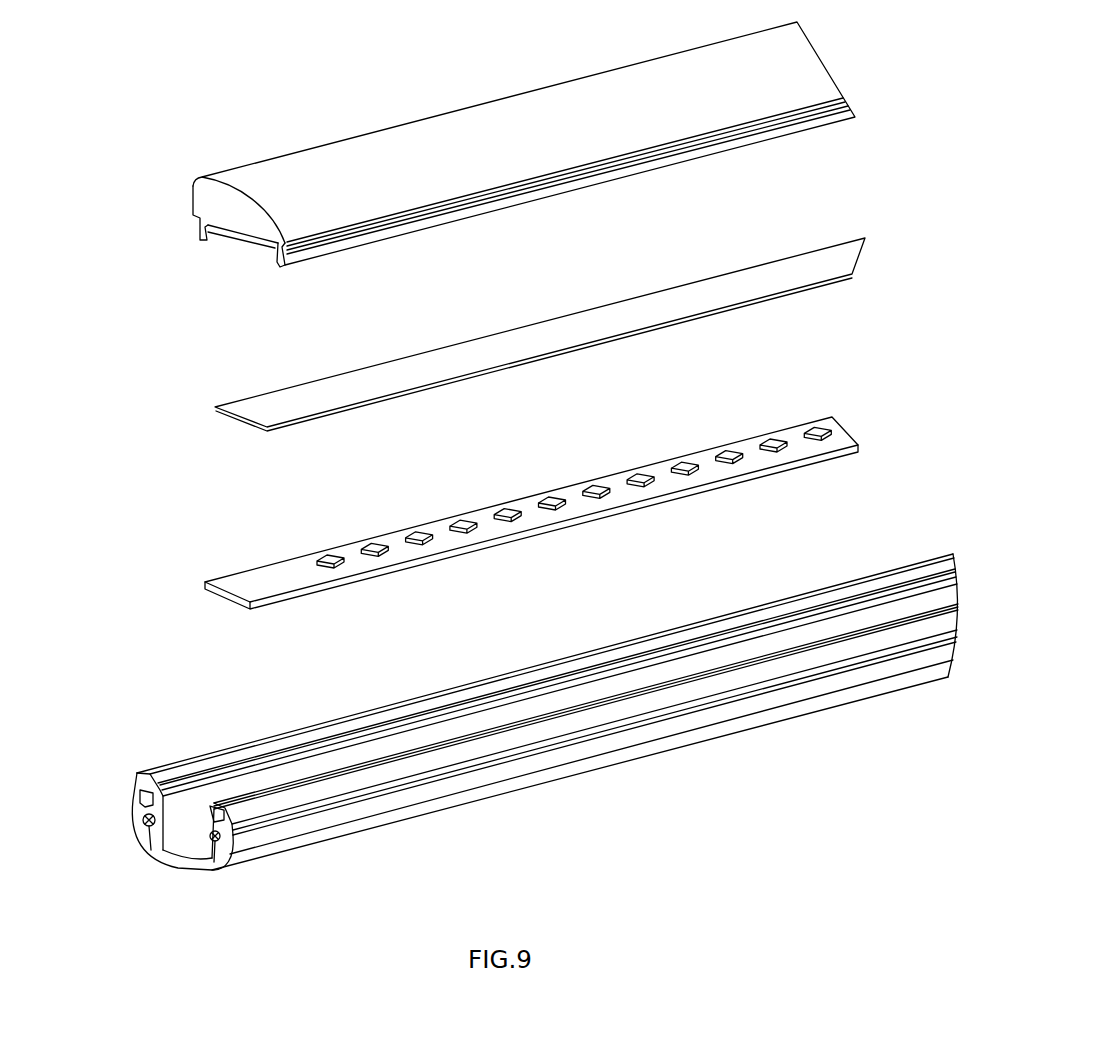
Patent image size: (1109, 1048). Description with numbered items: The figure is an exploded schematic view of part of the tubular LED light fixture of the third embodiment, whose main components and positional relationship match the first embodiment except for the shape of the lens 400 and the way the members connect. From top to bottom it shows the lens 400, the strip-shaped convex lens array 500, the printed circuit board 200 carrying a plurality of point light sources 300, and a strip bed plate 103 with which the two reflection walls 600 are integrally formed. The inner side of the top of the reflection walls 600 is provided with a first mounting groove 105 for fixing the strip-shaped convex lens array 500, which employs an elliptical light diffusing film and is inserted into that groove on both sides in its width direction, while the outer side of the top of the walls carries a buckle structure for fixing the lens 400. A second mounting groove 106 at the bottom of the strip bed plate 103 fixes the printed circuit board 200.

The lens 400 is at (225, 207).
The strip-shaped convex lens array 500 is at (257, 408).
The point light sources 300 is at (330, 556).
The printed circuit board 200 is at (232, 594).
The first mounting groove 105 is at (140, 791).
The reflection wall 600 is at (143, 814).
The second mounting groove 106 is at (210, 870).
The strip bed plate 103 is at (182, 862).